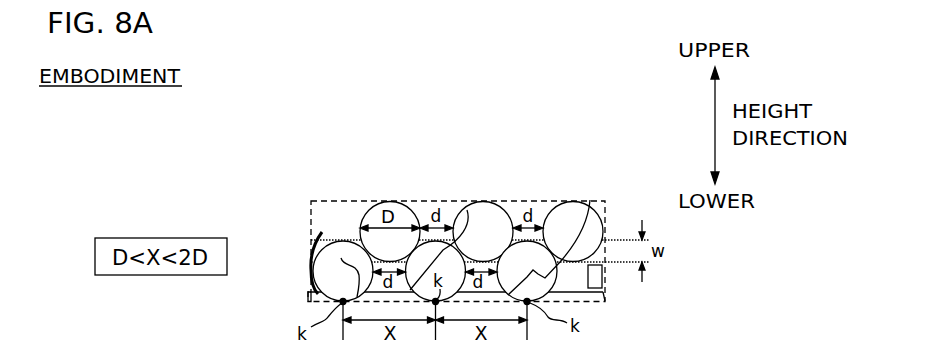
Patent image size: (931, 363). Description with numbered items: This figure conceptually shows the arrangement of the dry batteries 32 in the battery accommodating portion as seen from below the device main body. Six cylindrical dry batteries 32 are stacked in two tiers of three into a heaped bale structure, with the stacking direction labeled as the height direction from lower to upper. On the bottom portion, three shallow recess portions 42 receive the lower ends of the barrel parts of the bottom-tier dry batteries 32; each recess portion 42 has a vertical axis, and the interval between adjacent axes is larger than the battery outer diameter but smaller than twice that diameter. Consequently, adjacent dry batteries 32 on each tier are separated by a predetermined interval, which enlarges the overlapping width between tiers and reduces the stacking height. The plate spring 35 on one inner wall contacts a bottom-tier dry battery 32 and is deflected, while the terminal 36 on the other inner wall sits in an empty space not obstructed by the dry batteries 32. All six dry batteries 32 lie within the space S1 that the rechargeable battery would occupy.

The dry battery 32 is at (484, 213).
The plate spring 35 is at (322, 232).
The terminal 36 is at (605, 301).
The recess portion 42 is at (341, 258).
The space S1 is at (307, 235).